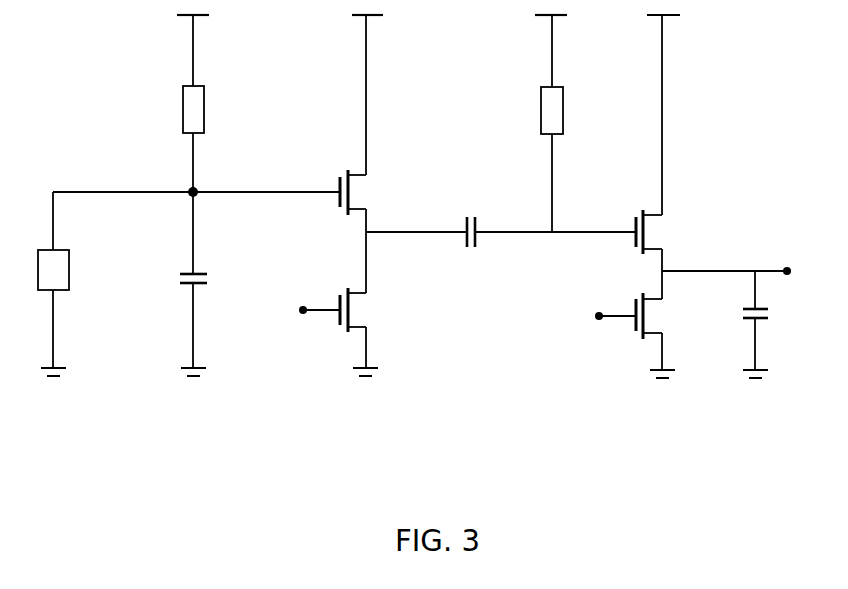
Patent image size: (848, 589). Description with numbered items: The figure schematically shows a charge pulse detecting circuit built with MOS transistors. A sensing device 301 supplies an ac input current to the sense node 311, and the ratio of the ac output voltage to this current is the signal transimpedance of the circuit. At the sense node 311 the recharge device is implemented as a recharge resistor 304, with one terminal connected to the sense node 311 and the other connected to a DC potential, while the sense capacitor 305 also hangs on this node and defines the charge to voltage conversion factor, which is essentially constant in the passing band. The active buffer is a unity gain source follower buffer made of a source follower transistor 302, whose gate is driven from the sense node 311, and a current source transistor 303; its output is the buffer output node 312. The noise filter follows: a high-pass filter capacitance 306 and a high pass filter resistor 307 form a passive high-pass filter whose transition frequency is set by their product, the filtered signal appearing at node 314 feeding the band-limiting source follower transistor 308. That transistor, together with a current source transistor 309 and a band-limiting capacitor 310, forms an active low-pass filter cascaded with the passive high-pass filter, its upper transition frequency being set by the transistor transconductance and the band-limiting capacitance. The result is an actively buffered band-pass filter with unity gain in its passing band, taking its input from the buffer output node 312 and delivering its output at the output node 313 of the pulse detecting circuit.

The sensing device 301 is at (36, 280).
The source follower transistor 302 is at (369, 192).
The current source transistor 303 is at (349, 310).
The recharge resistor 304 is at (175, 103).
The sense capacitor 305 is at (206, 280).
The high-pass filter capacitance 306 is at (490, 236).
The high pass filter resistor 307 is at (534, 123).
The band-limiting source follower transistor 308 is at (663, 232).
The current source transistor 309 is at (643, 316).
The band-limiting capacitor 310 is at (767, 320).
The sense node 311 is at (196, 180).
The buffer output node 312 is at (416, 217).
The output node 313 is at (726, 258).
The second stage input node 314 is at (555, 217).